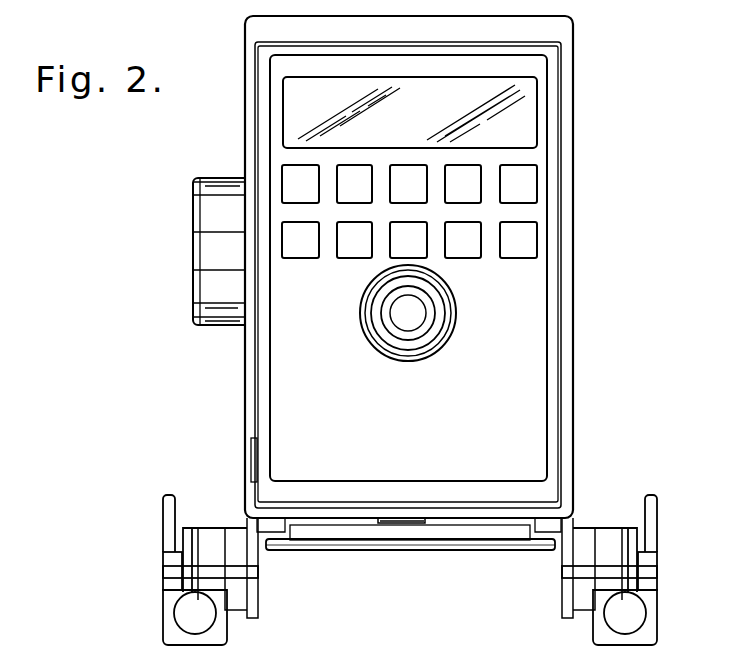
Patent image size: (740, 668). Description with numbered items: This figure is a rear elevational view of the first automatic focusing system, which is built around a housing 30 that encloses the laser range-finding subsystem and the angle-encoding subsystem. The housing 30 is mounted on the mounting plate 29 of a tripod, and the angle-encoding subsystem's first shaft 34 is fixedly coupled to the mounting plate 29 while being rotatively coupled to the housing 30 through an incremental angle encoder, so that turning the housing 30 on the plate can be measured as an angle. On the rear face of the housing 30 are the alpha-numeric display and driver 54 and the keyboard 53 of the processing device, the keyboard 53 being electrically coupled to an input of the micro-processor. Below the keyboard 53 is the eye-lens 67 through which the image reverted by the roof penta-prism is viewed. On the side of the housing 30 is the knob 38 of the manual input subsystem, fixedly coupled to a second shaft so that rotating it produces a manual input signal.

The housing 30 is at (538, 412).
The alpha-numeric display and driver 54 is at (532, 122).
The keyboard 53 is at (527, 217).
The eye-lens 67 is at (393, 343).
The knob 38 is at (203, 325).
The mounting plate 29 is at (382, 550).
The first shaft 34 is at (432, 521).